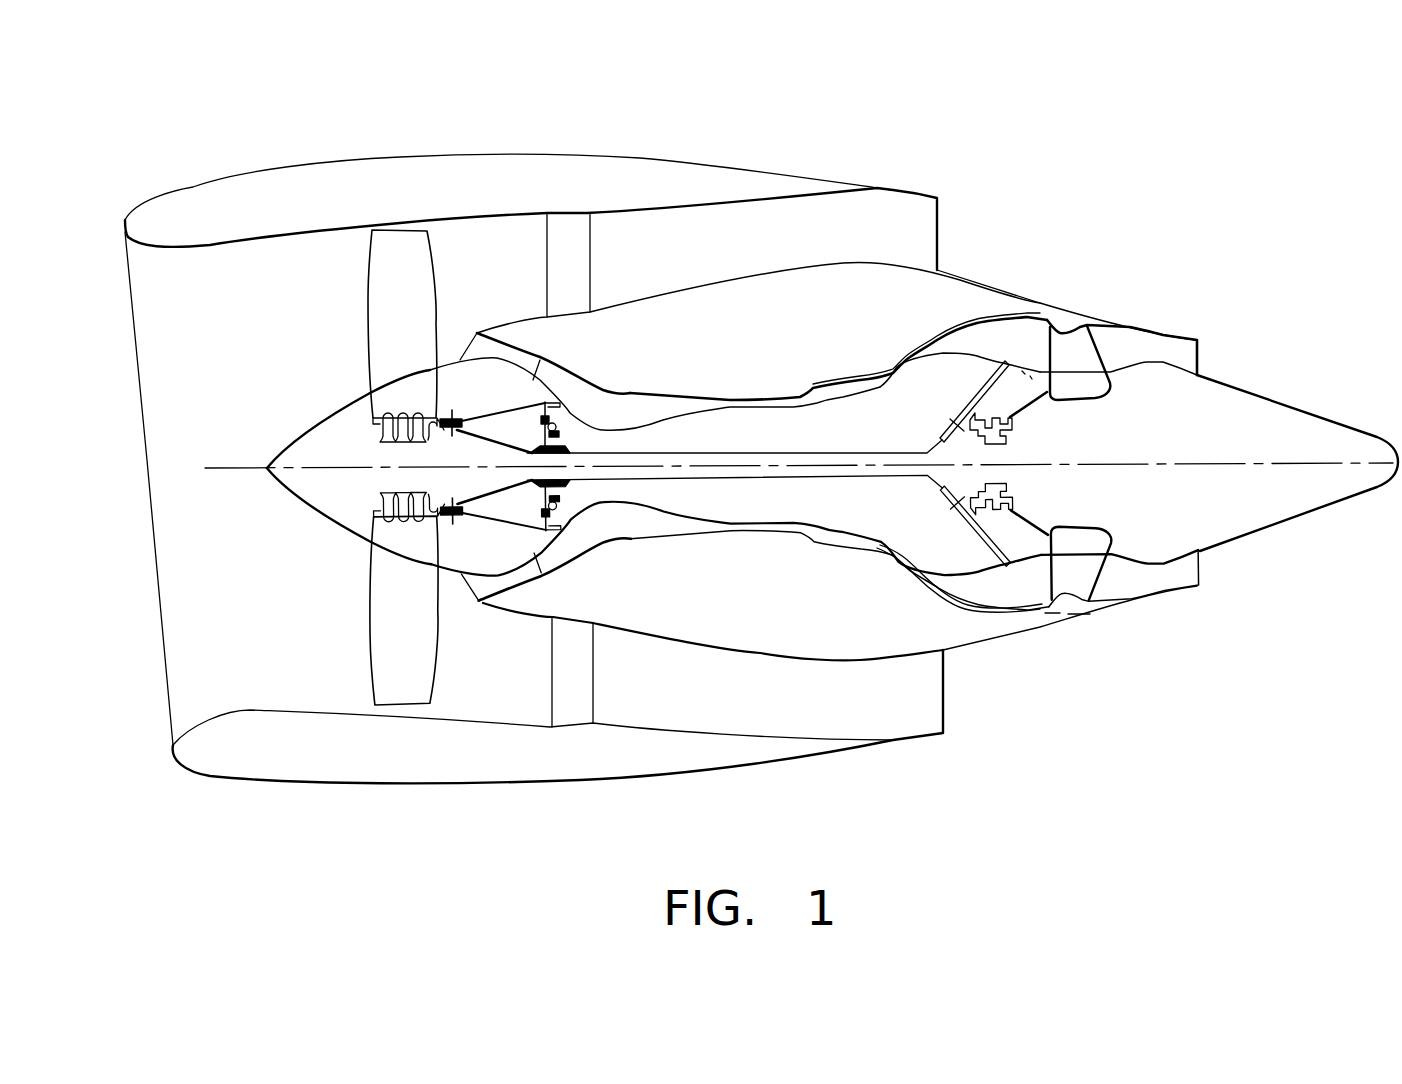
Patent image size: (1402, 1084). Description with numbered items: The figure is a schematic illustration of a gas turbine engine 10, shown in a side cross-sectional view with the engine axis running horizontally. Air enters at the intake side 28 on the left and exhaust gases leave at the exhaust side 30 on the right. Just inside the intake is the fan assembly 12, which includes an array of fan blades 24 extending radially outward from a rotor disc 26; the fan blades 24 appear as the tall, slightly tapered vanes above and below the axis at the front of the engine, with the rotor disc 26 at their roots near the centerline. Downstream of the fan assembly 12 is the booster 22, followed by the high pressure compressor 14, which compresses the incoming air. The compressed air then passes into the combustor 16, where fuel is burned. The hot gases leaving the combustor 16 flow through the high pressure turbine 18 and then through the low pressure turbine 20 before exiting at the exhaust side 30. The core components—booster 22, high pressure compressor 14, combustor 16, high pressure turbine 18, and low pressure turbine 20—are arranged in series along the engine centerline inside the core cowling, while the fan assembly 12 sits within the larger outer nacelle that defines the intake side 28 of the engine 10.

The gas turbine engine 10 is at (835, 110).
The fan assembly 12 is at (380, 626).
The high pressure compressor 14 is at (637, 405).
The combustor 16 is at (830, 393).
The high pressure turbine 18 is at (875, 562).
The low pressure turbine 20 is at (988, 340).
The booster 22 is at (520, 352).
The fan blades 24 is at (400, 305).
The rotor disc 26 is at (388, 560).
The intake side 28 is at (82, 255).
The exhaust side 30 is at (1015, 205).